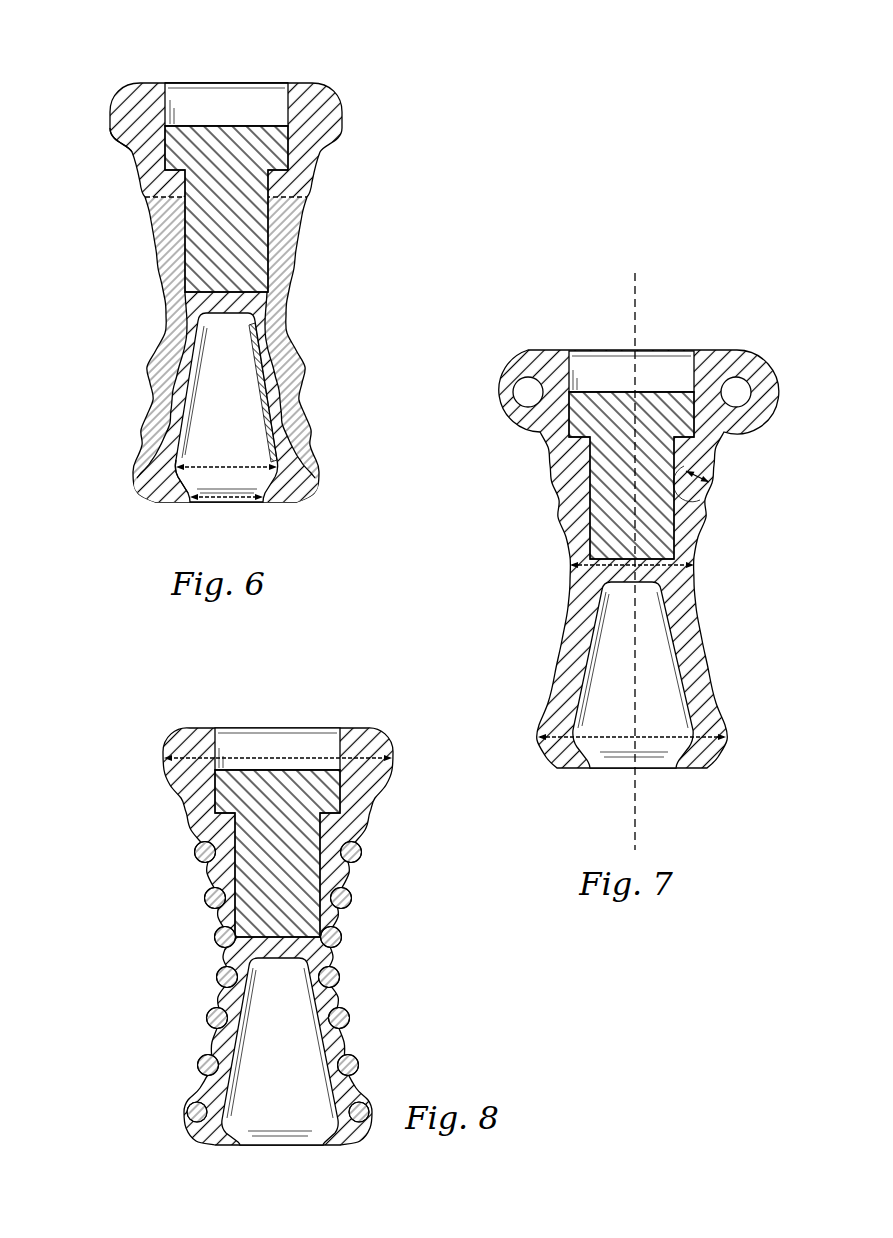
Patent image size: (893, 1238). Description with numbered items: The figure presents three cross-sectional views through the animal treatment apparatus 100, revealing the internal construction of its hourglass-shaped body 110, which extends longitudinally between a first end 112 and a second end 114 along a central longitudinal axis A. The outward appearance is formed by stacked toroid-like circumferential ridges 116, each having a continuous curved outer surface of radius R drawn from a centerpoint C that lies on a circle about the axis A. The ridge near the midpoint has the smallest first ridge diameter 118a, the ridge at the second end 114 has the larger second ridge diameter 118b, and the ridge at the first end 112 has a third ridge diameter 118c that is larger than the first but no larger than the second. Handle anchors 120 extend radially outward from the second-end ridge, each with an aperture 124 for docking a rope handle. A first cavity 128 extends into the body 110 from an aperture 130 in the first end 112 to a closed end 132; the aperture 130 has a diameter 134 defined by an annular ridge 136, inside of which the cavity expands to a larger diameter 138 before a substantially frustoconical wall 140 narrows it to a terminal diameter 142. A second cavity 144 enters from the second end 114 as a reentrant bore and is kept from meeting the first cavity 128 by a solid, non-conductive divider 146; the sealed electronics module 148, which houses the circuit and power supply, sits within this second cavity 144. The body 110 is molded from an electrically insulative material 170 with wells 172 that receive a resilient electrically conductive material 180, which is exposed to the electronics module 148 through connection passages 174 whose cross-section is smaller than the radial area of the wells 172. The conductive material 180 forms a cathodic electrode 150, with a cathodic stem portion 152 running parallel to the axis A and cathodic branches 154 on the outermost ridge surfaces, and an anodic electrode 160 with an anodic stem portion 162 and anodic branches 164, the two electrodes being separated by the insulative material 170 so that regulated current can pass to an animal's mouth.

In FIG. 6, the animal treatment apparatus 100 is at (250, 288).
In FIG. 7, the animal treatment apparatus 100 is at (620, 512).
In FIG. 8, the animal treatment apparatus 100 is at (251, 935).
In FIG. 6, the body 110 is at (148, 140).
In FIG. 6, the first end 112 is at (280, 502).
In FIG. 8, the first end 112 is at (220, 1144).
In FIG. 6, the second end 114 is at (303, 85).
In FIG. 8, the second end 114 is at (203, 727).
In FIG. 7, the circumferential ridges 116 is at (552, 483).
In FIG. 7, the first ridge diameter 118a is at (672, 573).
In FIG. 8, the second ridge diameter 118b is at (314, 756).
In FIG. 7, the third ridge diameter 118c is at (657, 738).
In FIG. 7, the handle anchors 120 is at (522, 351).
In FIG. 7, the aperture 124 is at (521, 398).
In FIG. 6, the first cavity 128 is at (210, 435).
In FIG. 8, the first cavity 128 is at (285, 1097).
In FIG. 8, the aperture 130 is at (252, 1147).
In FIG. 8, the closed end 132 is at (277, 962).
In FIG. 6, the aperture diameter 134 is at (215, 498).
In FIG. 6, the annular ridge 136 is at (180, 495).
In FIG. 6, the larger diameter 138 is at (243, 462).
In FIG. 6, the frustoconical wall 140 is at (187, 400).
In FIG. 6, the terminal diameter 142 is at (232, 328).
In FIG. 6, the second cavity 144 is at (228, 109).
In FIG. 6, the divider 146 is at (267, 303).
In FIG. 6, the electronics module 148 is at (200, 148).
In FIG. 7, the electronics module 148 is at (617, 420).
In FIG. 8, the electronics module 148 is at (292, 835).
In FIG. 6, the cathodic electrode 150 is at (282, 227).
In FIG. 6, the cathodic stem portion 152 is at (290, 247).
In FIG. 8, the cathodic branches 154 is at (220, 940).
In FIG. 6, the anodic electrode 160 is at (168, 245).
In FIG. 6, the anodic stem portion 162 is at (157, 293).
In FIG. 8, the anodic branches 164 is at (333, 938).
In FIG. 6, the electrically insulative material 170 is at (315, 156).
In FIG. 7, the electrically insulative material 170 is at (570, 518).
In FIG. 8, the electrically insulative material 170 is at (347, 1043).
In FIG. 6, the wells 172 is at (135, 173).
In FIG. 8, the wells 172 is at (212, 813).
In FIG. 6, the connection passages 174 is at (184, 210).
In FIG. 6, the electrically conductive material 180 is at (167, 330).
In FIG. 8, the electrically conductive material 180 is at (341, 1018).
In FIG. 7, the radius R is at (713, 463).
In FIG. 7, the centerpoint C is at (693, 497).
In FIG. 7, the central longitudinal axis A is at (635, 826).